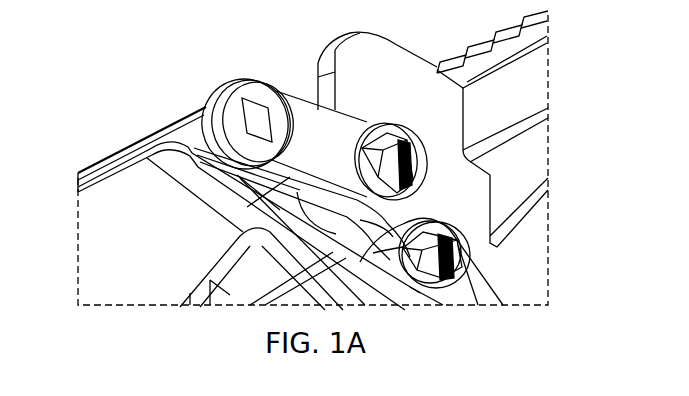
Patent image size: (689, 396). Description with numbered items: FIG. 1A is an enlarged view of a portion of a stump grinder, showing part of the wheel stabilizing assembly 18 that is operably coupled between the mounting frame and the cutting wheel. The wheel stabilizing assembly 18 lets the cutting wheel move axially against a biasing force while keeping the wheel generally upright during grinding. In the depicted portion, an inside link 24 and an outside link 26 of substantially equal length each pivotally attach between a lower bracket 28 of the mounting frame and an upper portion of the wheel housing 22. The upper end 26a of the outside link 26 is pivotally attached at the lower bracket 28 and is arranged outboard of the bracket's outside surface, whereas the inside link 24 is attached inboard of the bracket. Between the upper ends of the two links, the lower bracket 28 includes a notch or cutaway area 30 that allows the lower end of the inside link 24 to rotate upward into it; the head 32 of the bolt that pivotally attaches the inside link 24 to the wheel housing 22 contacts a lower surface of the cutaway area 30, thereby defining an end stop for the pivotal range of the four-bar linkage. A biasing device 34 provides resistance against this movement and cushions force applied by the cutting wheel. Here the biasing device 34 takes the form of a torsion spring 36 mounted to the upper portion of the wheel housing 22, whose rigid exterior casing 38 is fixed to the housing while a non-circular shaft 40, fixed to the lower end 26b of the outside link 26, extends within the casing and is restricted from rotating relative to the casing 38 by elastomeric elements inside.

The wheel stabilizing assembly 18 is at (140, 61).
The wheel housing 22 is at (107, 260).
The inside link 24 is at (463, 293).
The outside link 26 is at (330, 109).
The upper end of the outside link 26a is at (388, 120).
The lower end of the outside link 26b is at (245, 105).
The lower bracket 28 is at (533, 240).
The cutaway area 30 is at (492, 283).
The head of a bolt 32 is at (430, 285).
The biasing device 34 is at (114, 143).
The torsion spring 36 is at (200, 128).
The rigid exterior casing 38 is at (143, 140).
The non-circular shaft 40 is at (256, 114).